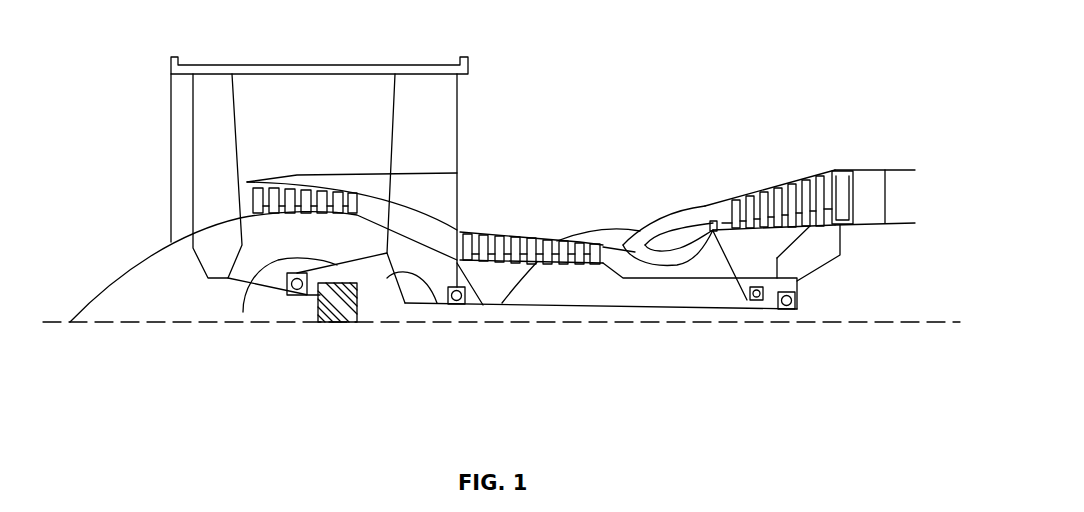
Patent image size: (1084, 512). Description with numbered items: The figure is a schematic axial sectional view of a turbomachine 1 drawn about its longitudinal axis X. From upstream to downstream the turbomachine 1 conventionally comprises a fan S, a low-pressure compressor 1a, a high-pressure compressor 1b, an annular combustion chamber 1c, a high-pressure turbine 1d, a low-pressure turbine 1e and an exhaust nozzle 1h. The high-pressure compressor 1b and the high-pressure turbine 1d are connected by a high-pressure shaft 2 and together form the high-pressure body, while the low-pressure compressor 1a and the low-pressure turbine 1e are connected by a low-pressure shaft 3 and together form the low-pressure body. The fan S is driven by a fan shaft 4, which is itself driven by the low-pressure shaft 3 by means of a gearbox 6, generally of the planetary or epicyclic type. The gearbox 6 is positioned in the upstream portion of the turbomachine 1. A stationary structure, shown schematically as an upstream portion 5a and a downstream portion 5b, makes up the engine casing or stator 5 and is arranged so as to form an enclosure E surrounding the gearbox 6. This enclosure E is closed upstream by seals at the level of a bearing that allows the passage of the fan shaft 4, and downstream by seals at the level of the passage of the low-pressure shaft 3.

The turbomachine 1 is at (593, 114).
The fan S is at (205, 135).
The low-pressure compressor 1a is at (272, 200).
The high-pressure compressor 1b is at (491, 237).
The annular combustion chamber 1c is at (668, 230).
The high-pressure turbine 1d is at (713, 220).
The low-pressure turbine 1e is at (840, 176).
The exhaust nozzle 1h is at (897, 202).
The high-pressure shaft 2 is at (633, 279).
The low-pressure shaft 3 is at (560, 308).
The fan shaft 4 is at (272, 289).
The engine casing or stator 5 is at (372, 256).
The upstream portion 5a is at (243, 312).
The downstream portion 5b is at (452, 289).
The gearbox 6 is at (333, 298).
The enclosure E is at (367, 283).
The engine axis X is at (70, 322).